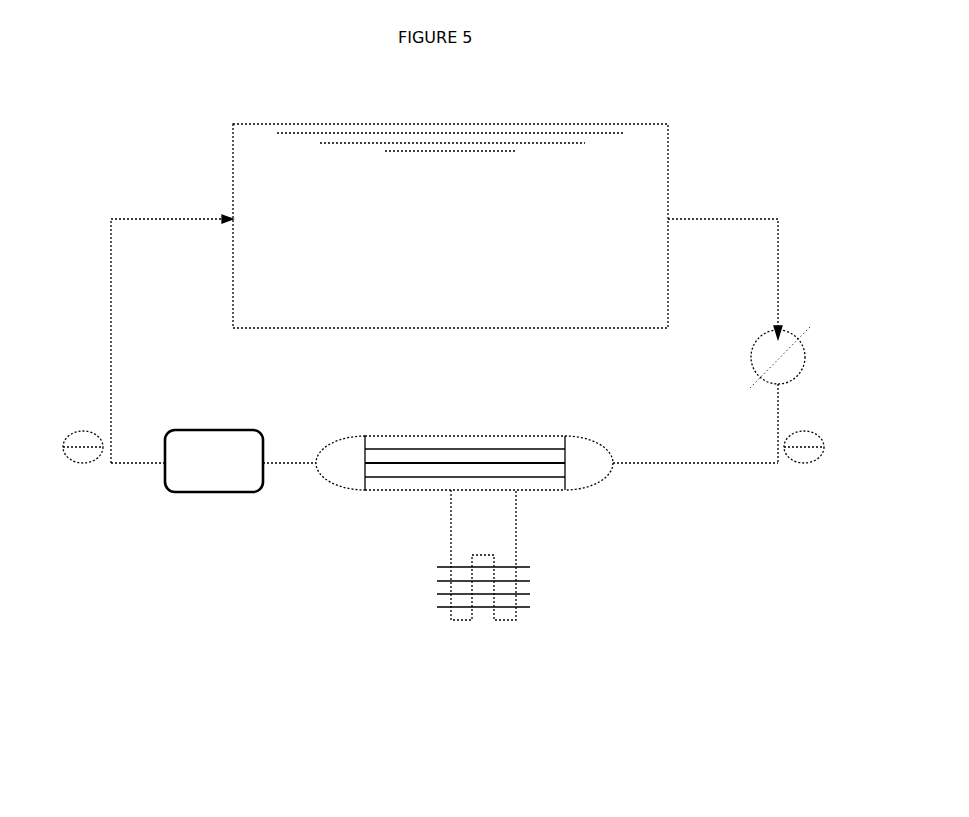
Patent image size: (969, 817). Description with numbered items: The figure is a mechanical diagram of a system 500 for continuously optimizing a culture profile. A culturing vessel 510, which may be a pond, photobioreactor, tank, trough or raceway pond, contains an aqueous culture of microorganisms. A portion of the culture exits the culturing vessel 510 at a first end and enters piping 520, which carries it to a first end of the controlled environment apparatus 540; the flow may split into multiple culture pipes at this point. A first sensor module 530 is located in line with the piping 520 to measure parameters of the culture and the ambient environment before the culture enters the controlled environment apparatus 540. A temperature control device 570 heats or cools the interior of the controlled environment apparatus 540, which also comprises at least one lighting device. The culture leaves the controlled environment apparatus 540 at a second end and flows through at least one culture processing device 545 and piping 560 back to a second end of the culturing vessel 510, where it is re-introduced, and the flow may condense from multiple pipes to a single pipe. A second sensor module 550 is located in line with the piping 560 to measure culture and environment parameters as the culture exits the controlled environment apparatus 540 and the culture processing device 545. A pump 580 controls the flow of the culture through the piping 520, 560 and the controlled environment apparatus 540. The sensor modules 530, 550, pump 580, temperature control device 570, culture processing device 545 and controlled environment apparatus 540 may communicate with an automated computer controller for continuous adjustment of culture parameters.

The system 500 is at (220, 593).
The culturing vessel 510 is at (668, 160).
The piping 520 is at (778, 239).
The first sensor module 530 is at (809, 463).
The controlled environment apparatus 540 is at (595, 490).
The culture processing device 545 is at (220, 430).
The second sensor module 550 is at (85, 463).
The piping 560 is at (111, 252).
The temperature control device 570 is at (509, 620).
The pump 580 is at (752, 358).